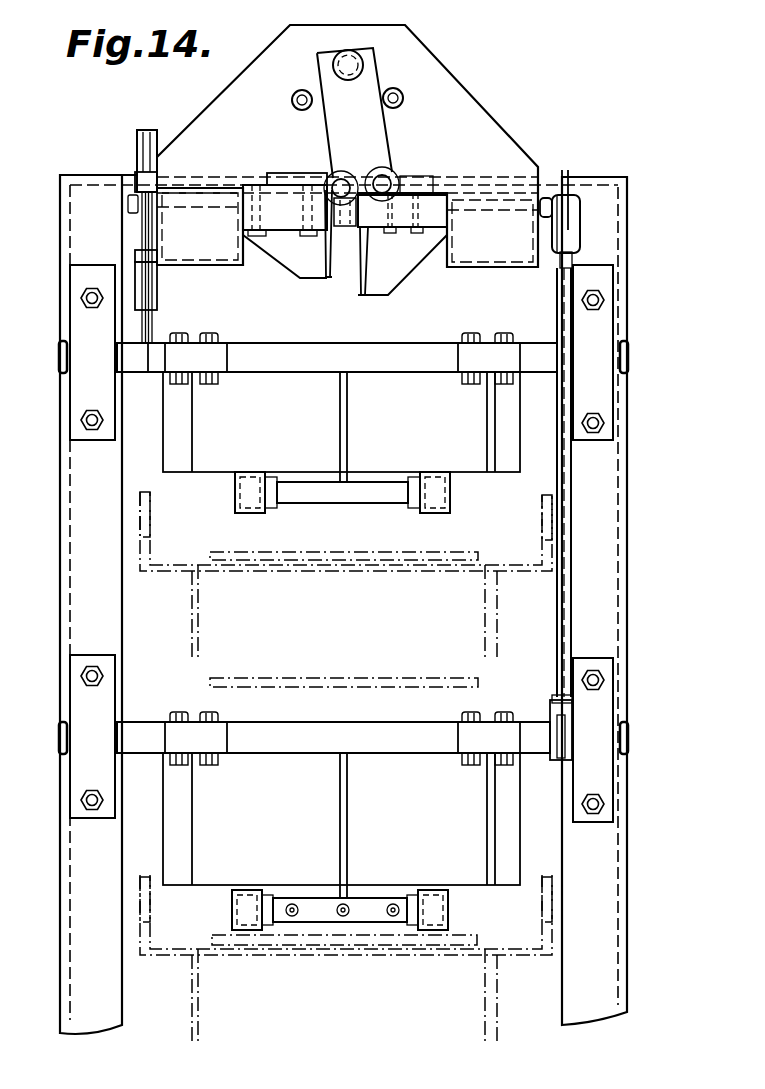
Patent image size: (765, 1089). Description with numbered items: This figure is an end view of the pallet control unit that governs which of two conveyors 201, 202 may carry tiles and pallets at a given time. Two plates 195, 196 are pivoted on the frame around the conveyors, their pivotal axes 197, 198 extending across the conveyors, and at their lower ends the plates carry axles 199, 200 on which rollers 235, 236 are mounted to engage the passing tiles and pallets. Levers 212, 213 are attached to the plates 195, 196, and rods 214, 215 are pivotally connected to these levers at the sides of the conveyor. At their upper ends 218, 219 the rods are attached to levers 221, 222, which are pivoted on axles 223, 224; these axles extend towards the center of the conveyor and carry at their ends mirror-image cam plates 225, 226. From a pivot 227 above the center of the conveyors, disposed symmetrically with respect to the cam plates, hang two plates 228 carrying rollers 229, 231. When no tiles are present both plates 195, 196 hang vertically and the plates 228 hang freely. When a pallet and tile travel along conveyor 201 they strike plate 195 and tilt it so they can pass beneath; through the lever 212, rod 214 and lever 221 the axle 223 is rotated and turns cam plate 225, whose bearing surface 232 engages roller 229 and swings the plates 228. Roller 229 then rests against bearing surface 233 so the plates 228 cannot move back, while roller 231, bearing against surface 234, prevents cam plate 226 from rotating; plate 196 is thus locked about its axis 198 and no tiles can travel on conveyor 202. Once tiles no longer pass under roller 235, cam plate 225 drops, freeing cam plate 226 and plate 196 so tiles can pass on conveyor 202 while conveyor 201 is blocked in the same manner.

The plate 195 is at (313, 392).
The plate 196 is at (318, 775).
The pivotal axis 197 is at (58, 360).
The pivotal axis 198 is at (60, 750).
The axle 199 is at (344, 492).
The axle 200 is at (366, 914).
The conveyor 201 is at (367, 560).
The conveyor 202 is at (311, 945).
The lever 212 is at (143, 318).
The lever 213 is at (552, 728).
The rod 214 is at (132, 244).
The rod 215 is at (560, 607).
The upper end of rod 218 is at (142, 150).
The upper end of rod 219 is at (560, 213).
The lever 221 is at (137, 177).
The lever 222 is at (568, 175).
The axle 223 is at (198, 207).
The axle 224 is at (544, 200).
The cam plate 225 is at (300, 255).
The cam plate 226 is at (383, 248).
The pivot 227 is at (357, 50).
The plates 228 is at (340, 92).
The roller 229 is at (333, 189).
The roller 231 is at (388, 180).
The bearing surface 232 is at (288, 172).
The bearing surface 233 is at (333, 235).
The bearing surface 234 is at (367, 213).
The roller 235 is at (251, 503).
The roller 236 is at (250, 924).